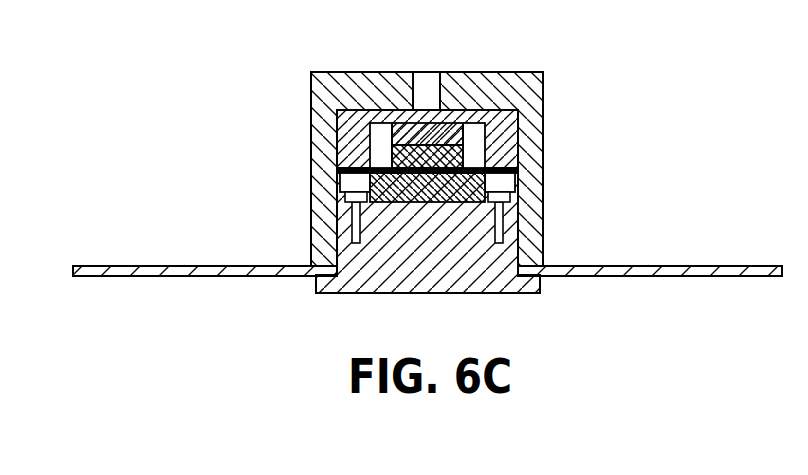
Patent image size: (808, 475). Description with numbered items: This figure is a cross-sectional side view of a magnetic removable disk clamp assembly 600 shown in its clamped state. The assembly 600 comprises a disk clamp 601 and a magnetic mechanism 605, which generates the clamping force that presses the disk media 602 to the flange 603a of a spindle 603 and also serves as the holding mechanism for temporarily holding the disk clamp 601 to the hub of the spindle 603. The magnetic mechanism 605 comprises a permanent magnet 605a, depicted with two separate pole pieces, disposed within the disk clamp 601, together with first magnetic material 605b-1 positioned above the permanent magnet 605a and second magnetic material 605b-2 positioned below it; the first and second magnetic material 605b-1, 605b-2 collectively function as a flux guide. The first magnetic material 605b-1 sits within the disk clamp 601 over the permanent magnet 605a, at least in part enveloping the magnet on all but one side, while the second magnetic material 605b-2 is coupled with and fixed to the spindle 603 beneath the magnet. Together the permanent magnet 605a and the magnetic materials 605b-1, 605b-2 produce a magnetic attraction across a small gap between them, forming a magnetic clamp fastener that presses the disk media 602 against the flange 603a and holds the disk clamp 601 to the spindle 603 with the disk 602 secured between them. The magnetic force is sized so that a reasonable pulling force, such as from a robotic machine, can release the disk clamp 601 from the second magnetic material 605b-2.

The magnetic removable disk clamp assembly 600 is at (457, 179).
The disk clamp 601 is at (322, 108).
The disk media 602 is at (695, 266).
The spindle 603 is at (447, 290).
The flange 603a is at (321, 304).
The magnetic mechanism 605 is at (510, 179).
The permanent magnet 605a is at (481, 97).
The first magnetic material 605b-1 is at (456, 150).
The second magnetic material 605b-2 is at (398, 203).